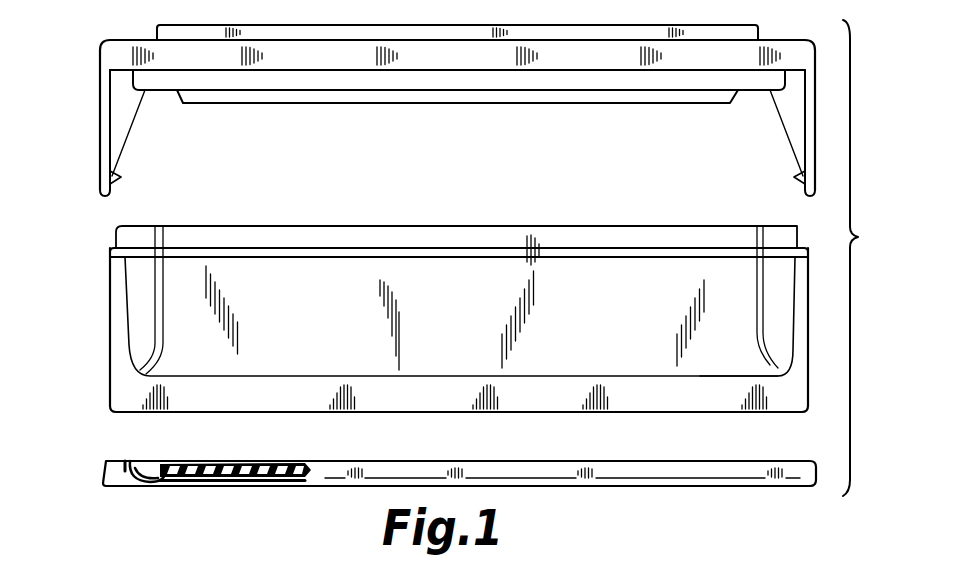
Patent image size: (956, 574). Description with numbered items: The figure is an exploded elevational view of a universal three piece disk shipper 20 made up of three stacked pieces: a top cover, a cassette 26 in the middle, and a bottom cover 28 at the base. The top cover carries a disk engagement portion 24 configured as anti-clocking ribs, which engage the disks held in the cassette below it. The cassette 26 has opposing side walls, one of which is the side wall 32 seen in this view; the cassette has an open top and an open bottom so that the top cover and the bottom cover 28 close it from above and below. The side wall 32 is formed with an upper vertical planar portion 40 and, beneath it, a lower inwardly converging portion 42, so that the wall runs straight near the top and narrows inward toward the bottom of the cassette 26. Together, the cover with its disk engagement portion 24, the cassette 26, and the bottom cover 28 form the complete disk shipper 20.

The three piece disk shipper 20 is at (449, 258).
The disk engagement portion 24 is at (265, 103).
The cassette 26 is at (419, 297).
The bottom cover 28 is at (104, 462).
The side wall 32 is at (700, 303).
The upper vertical planar portion 40 is at (723, 303).
The lower inwardly converging portion 42 is at (737, 320).